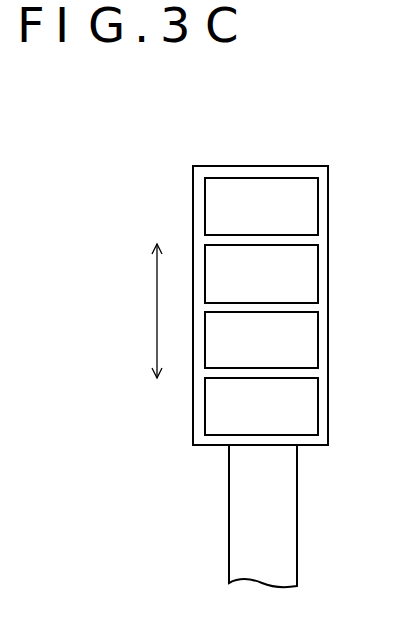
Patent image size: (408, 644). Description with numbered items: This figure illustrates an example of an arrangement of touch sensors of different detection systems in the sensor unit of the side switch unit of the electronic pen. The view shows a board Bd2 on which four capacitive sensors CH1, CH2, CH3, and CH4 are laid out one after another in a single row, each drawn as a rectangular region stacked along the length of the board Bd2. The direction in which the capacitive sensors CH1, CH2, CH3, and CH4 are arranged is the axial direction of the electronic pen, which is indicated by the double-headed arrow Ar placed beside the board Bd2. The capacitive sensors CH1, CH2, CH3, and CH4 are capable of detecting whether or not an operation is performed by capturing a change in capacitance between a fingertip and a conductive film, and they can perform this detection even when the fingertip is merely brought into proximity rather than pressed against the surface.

The board Bd2 is at (297, 376).
The capacitive sensor CH1 is at (261, 206).
The capacitive sensor CH2 is at (261, 274).
The capacitive sensor CH3 is at (261, 340).
The capacitive sensor CH4 is at (261, 406).
The arrow Ar is at (157, 303).